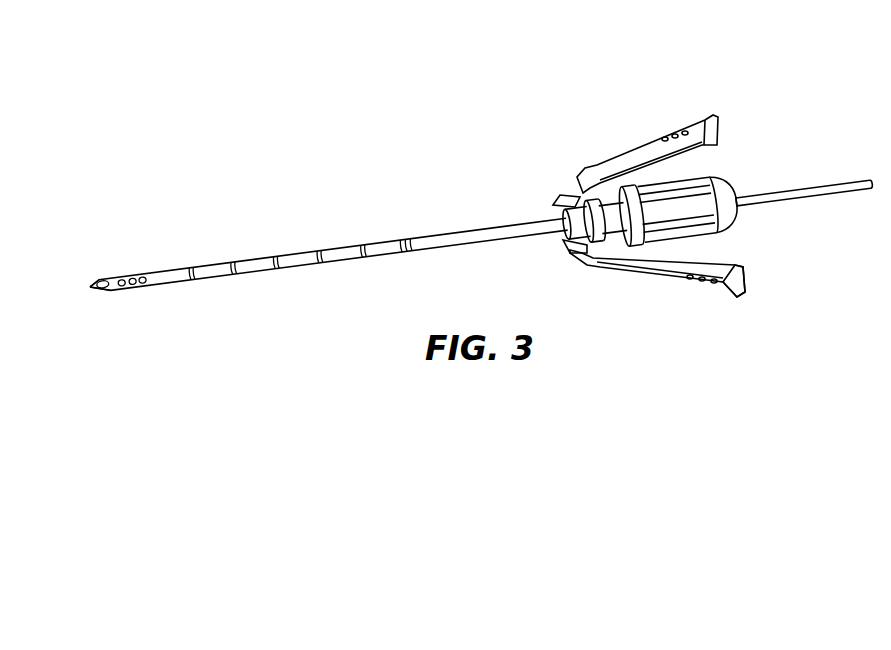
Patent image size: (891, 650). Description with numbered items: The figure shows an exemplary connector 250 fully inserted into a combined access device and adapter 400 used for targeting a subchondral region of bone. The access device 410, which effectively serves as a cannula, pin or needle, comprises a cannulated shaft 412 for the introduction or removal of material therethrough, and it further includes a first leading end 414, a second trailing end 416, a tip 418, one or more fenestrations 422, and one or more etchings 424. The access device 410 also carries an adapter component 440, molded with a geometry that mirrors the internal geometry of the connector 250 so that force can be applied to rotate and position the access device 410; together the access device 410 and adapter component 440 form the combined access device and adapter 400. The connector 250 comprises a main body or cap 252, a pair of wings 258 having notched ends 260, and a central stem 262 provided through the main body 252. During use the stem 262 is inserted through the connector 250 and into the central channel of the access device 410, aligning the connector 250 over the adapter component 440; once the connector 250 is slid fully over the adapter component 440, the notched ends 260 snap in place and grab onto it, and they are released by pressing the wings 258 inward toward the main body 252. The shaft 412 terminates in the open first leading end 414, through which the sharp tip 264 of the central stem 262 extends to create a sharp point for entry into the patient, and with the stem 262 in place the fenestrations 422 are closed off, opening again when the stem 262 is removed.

The connector 250 is at (623, 122).
The main body 252 is at (735, 225).
The wings 258 is at (650, 278).
The notched ends 260 is at (743, 295).
The central stem 262 is at (787, 190).
The sharp tip 264 is at (95, 292).
The combined access device and adapter 400 is at (308, 208).
The access device 410 is at (450, 240).
The cannulated shaft 412 is at (302, 258).
The first leading end 414 is at (105, 281).
The second trailing end 416 is at (547, 215).
The tip 418 is at (107, 290).
The fenestrations 422 is at (124, 279).
The etchings 424 is at (233, 268).
The adapter component 440 is at (578, 233).